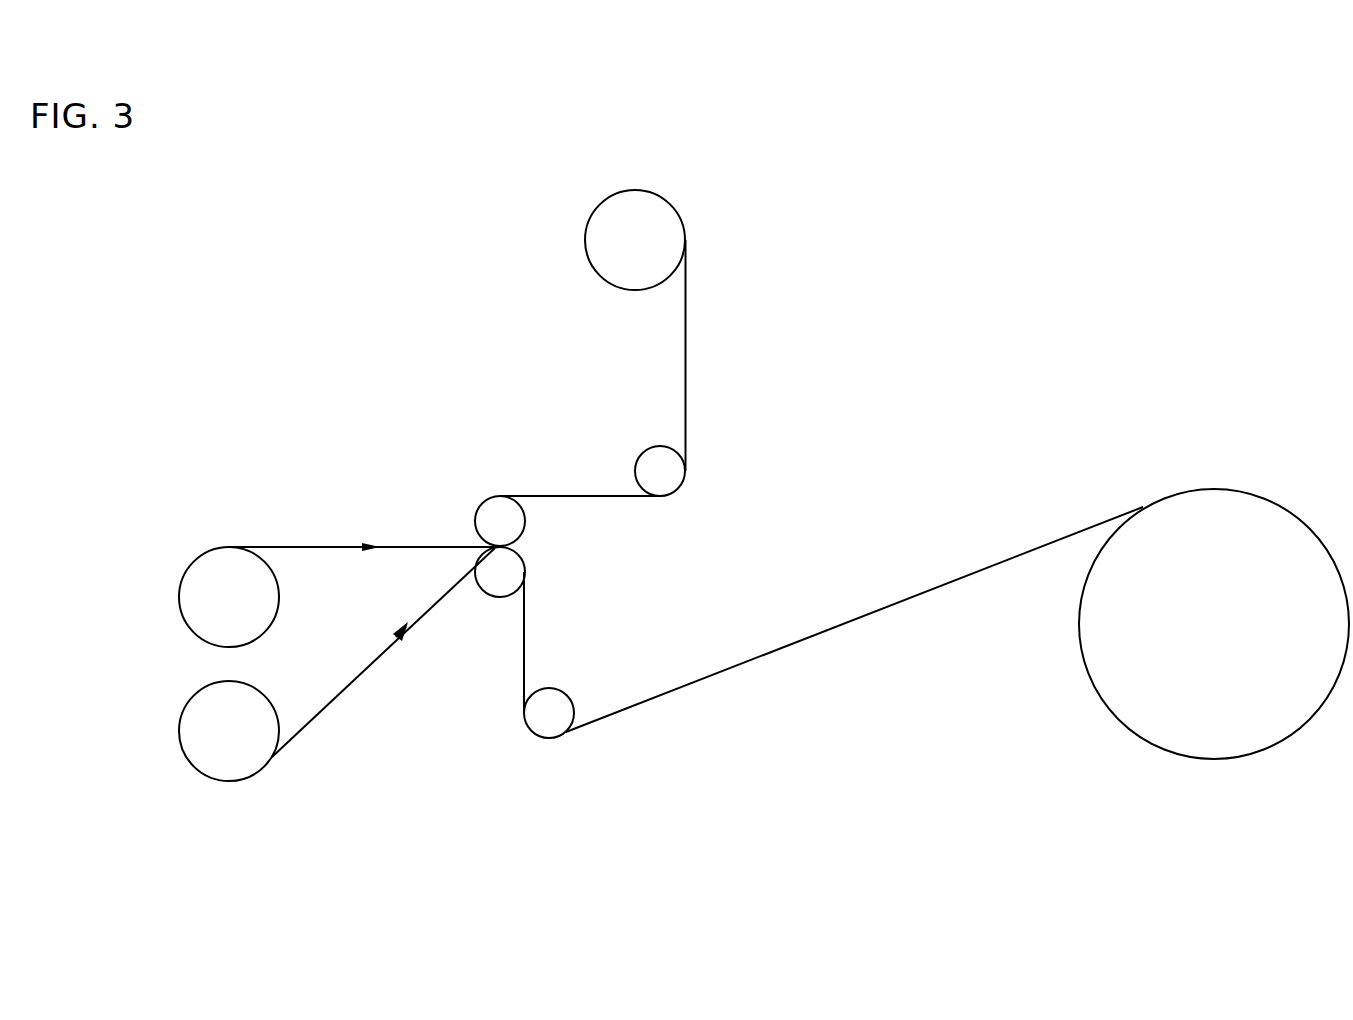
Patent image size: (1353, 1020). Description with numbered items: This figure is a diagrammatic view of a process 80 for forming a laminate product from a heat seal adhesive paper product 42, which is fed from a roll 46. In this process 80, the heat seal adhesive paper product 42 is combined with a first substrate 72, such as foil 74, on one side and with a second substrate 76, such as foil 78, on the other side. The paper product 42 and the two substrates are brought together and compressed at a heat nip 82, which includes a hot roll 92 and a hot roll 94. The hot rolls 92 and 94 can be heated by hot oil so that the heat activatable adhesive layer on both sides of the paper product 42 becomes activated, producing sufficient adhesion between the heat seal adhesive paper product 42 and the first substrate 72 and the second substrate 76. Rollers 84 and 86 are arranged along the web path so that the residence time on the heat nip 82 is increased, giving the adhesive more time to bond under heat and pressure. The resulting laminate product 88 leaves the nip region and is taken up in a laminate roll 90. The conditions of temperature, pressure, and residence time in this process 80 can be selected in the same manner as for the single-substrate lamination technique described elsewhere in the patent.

The heat seal adhesive paper product 42 is at (310, 547).
The roll 46 is at (268, 630).
The first substrate 72 is at (686, 362).
The foil 74 is at (598, 496).
The second substrate 76 is at (333, 702).
The foil 78 is at (385, 648).
The process for forming a laminate product 80 is at (752, 296).
The heat nip 82 is at (539, 443).
The roller 84 is at (652, 447).
The roller 86 is at (558, 688).
The laminate product 88 is at (840, 627).
The laminate roll 90 is at (1212, 488).
The hot roll 92 is at (498, 597).
The hot roll 94 is at (492, 498).